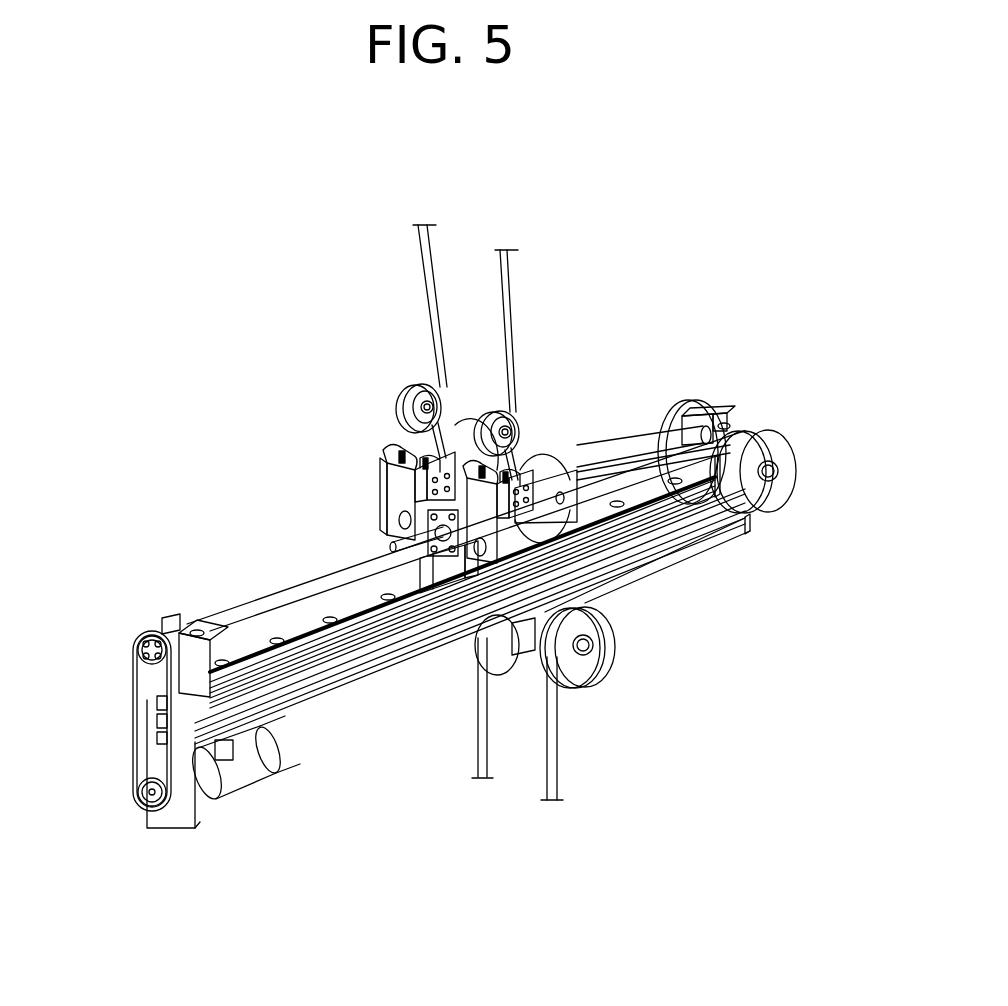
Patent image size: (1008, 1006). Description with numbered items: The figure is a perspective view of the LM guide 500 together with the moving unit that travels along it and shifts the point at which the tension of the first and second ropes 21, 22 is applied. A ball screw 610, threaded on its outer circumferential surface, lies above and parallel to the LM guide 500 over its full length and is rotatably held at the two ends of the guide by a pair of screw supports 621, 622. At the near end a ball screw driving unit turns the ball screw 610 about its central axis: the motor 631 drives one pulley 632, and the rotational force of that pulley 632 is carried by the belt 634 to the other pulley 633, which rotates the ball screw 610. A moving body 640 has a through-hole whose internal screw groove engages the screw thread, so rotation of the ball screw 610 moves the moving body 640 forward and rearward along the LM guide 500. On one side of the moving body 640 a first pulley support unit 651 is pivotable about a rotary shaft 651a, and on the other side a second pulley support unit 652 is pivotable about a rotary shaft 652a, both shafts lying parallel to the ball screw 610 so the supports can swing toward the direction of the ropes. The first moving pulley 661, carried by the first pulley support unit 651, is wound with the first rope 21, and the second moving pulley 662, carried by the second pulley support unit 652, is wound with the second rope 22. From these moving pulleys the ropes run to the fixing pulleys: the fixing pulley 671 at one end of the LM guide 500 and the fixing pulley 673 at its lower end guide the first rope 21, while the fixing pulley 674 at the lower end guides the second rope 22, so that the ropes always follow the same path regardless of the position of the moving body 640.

The first rope 21 is at (515, 290).
The second rope 22 is at (418, 260).
The LM guide 500 is at (340, 692).
The ball screw 610 is at (248, 608).
The screw support 621 is at (715, 408).
The screw support 622 is at (180, 625).
The motor 631 is at (248, 780).
The pulley 632 is at (140, 786).
The pulley 633 is at (136, 650).
The belt 634 is at (135, 718).
The moving body 640 is at (428, 530).
The first pulley support unit 651 is at (460, 556).
The rotary shaft 651a is at (478, 562).
The second pulley support unit 652 is at (400, 497).
The rotary shaft 652a is at (400, 520).
The first moving pulley 661 is at (540, 445).
The second moving pulley 662 is at (458, 420).
The fixing pulley 671 is at (790, 455).
The fixing pulley 673 is at (606, 638).
The fixing pulley 674 is at (505, 655).